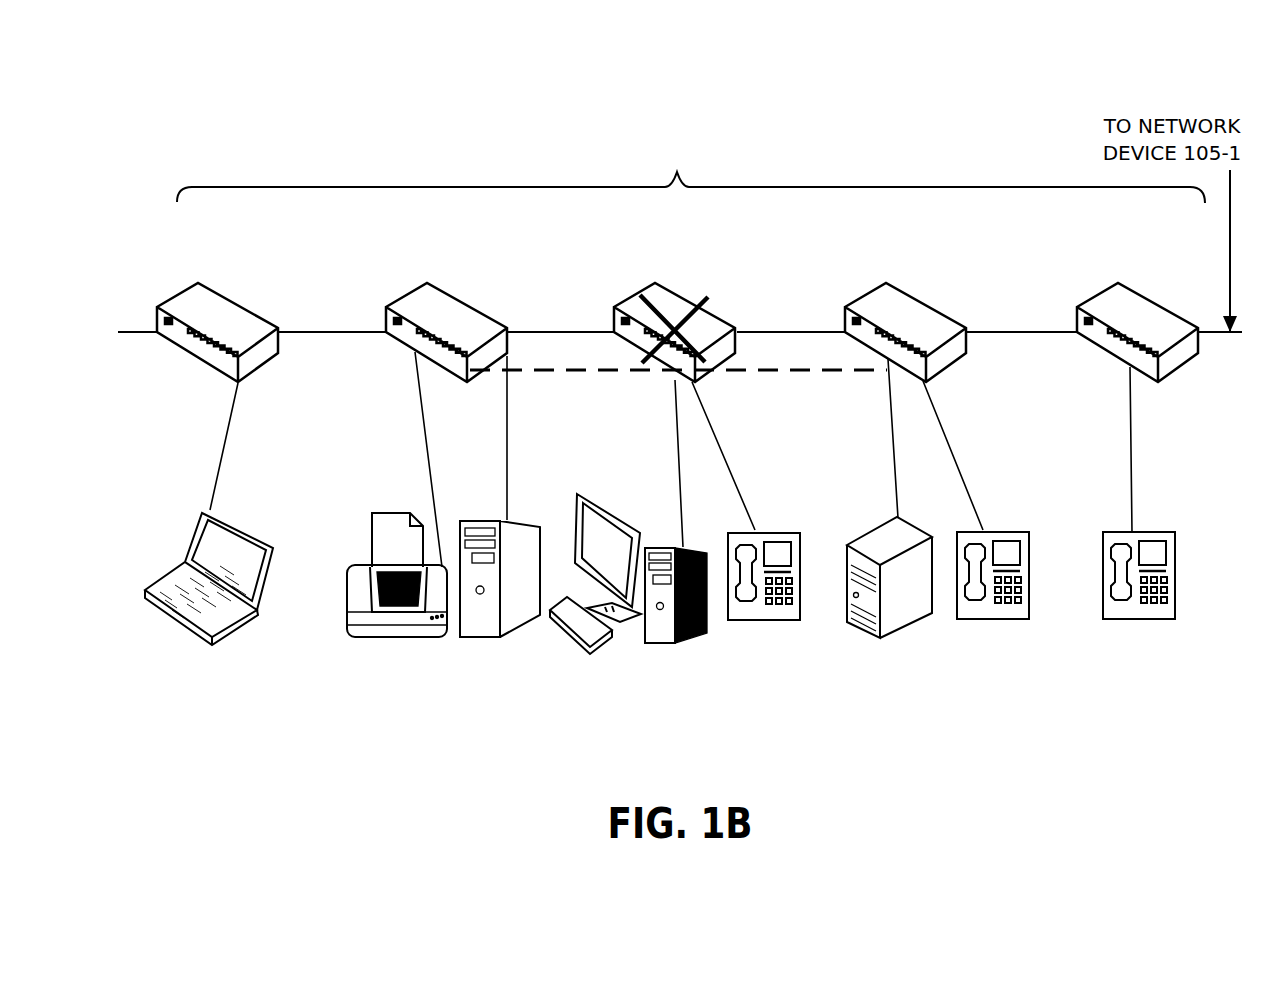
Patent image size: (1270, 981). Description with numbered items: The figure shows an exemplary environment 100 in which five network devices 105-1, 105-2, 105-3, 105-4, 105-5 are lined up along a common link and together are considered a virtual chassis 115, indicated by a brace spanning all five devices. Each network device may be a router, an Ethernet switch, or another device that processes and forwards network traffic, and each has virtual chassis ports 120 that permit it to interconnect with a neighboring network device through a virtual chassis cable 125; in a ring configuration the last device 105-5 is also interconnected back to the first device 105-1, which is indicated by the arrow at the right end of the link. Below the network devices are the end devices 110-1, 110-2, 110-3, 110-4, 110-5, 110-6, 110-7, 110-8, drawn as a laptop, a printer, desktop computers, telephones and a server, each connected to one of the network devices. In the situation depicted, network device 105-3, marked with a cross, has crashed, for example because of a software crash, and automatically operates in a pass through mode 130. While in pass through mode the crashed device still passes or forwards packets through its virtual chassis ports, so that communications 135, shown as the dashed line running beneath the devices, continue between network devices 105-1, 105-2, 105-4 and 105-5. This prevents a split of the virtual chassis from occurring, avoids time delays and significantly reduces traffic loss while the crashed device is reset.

The environment 100 is at (238, 68).
The network device 105-1 is at (238, 308).
The network device 105-2 is at (450, 308).
The network device 105-3 is at (678, 308).
The network device 105-4 is at (908, 308).
The network device 105-5 is at (1127, 308).
The end device 110-1 is at (209, 621).
The end device 110-2 is at (397, 621).
The end device 110-3 is at (500, 625).
The end device 110-4 is at (628, 612).
The end device 110-5 is at (766, 631).
The end device 110-6 is at (889, 623).
The end device 110-7 is at (996, 631).
The end device 110-8 is at (1141, 631).
The virtual chassis 115 is at (691, 145).
The virtual chassis ports 120 is at (385, 335).
The virtual chassis cable 125 is at (325, 332).
The pass through mode 130 is at (737, 317).
The communications 135 is at (555, 360).